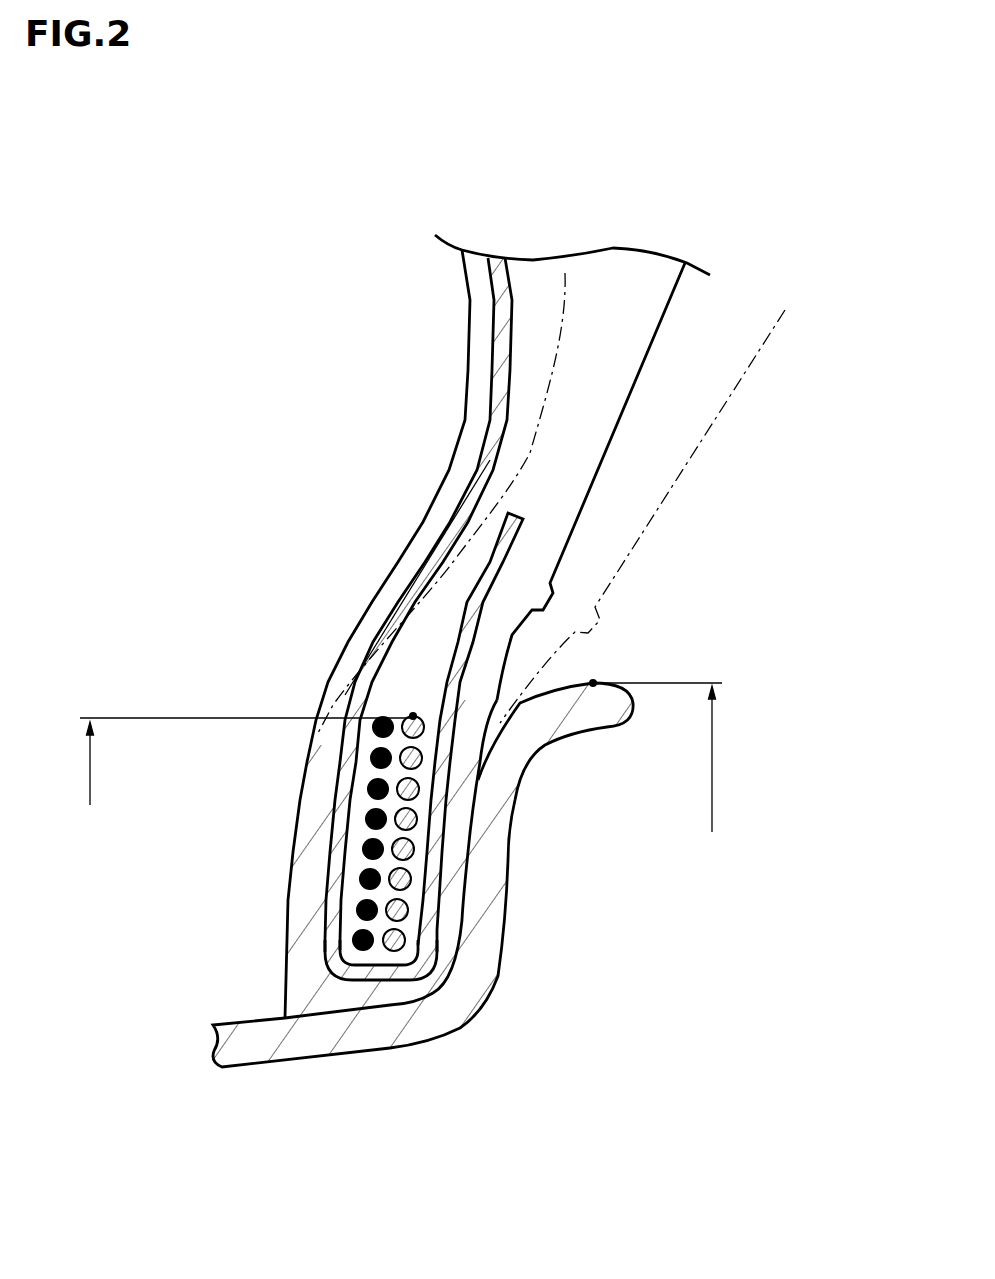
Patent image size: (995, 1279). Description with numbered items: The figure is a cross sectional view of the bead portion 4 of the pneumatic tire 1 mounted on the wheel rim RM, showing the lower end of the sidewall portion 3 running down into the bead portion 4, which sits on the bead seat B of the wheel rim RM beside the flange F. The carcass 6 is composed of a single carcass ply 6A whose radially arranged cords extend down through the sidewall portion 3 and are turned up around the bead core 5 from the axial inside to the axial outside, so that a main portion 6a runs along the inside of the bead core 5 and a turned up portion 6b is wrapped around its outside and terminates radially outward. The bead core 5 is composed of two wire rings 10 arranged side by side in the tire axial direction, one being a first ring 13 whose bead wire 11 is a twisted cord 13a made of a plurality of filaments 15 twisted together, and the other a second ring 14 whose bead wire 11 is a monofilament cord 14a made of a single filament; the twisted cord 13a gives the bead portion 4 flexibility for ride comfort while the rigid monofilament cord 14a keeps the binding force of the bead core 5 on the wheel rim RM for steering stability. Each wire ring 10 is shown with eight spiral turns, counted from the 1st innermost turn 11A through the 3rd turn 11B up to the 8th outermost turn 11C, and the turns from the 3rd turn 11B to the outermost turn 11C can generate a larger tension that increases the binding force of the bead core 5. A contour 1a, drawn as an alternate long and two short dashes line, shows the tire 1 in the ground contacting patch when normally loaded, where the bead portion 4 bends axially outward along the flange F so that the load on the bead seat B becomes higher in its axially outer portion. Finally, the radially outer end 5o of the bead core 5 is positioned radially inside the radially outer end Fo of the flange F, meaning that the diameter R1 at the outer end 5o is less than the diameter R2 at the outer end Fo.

The pneumatic tire 1 is at (655, 340).
The contour of the tire in the ground contacting patch 1a is at (738, 385).
The sidewall portion 3 is at (612, 455).
The bead portion 4 is at (452, 848).
The bead core 5 is at (396, 771).
The radially outer end of the bead core 5o is at (413, 714).
The carcass 6 is at (572, 619).
The carcass ply 6A is at (522, 619).
The main portion 6a is at (490, 457).
The turned up portion 6b is at (483, 578).
The wire ring 10 is at (477, 1068).
The bead wire 11 is at (365, 958).
The 1st innermost turn 11A is at (345, 935).
The 3rd turn 11B is at (362, 872).
The 8th outermost turn 11C is at (377, 732).
The first ring 13 is at (517, 1000).
The twisted cord 13a is at (397, 960).
The second ring 14 is at (247, 948).
The monofilament cord 14a is at (353, 960).
The filament 15 is at (400, 912).
The flange F is at (493, 788).
The radially outer end of the flange Fo is at (595, 683).
The diameter of the radially outer end of the bead core R1 is at (244, 779).
The diameter of the radially outer end of the flange R2 is at (710, 775).
The wheel rim RM is at (360, 1016).
The bead seat B is at (320, 1040).